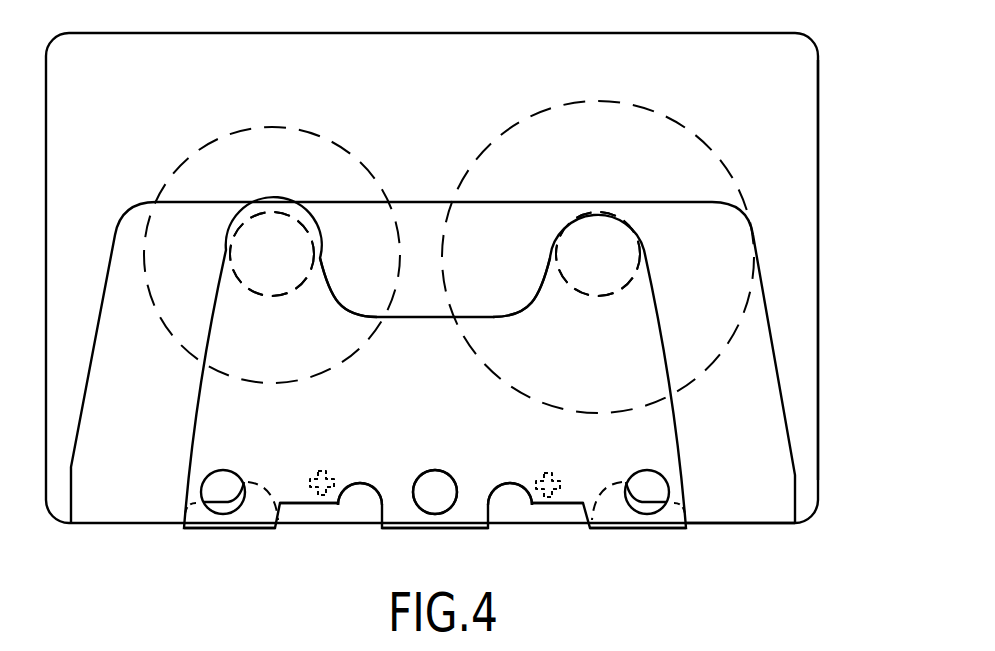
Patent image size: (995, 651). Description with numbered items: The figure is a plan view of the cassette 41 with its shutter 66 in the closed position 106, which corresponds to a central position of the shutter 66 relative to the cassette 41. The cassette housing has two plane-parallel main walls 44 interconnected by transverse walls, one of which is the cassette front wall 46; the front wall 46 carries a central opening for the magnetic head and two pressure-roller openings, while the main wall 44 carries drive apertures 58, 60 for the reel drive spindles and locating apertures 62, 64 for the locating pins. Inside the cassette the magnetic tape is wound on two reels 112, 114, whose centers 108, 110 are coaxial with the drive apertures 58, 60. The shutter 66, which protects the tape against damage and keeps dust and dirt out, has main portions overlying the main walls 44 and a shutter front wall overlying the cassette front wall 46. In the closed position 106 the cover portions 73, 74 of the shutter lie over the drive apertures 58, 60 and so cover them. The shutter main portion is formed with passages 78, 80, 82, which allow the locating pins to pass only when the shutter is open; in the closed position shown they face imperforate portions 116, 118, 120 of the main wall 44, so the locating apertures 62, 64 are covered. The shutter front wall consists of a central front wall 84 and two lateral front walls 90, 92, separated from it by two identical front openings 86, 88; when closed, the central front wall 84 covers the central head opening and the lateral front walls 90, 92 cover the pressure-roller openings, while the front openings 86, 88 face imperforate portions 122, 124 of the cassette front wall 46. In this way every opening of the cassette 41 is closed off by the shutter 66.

The cassette 41 is at (824, 322).
The main walls 44 is at (804, 188).
The cassette front wall 46 is at (757, 525).
The drive aperture 58 is at (278, 223).
The drive aperture 60 is at (596, 230).
The locating aperture 62 is at (323, 470).
The locating aperture 64 is at (548, 471).
The shutter 66 is at (194, 418).
The cover portion 73 is at (318, 280).
The cover portion 74 is at (646, 287).
The passage 78 is at (240, 481).
The passage 80 is at (425, 480).
The passage 82 is at (628, 485).
The central front wall 84 is at (463, 528).
The front opening 86 is at (357, 523).
The front opening 88 is at (573, 527).
The lateral front wall 90 is at (220, 528).
The lateral front wall 92 is at (628, 528).
The closed position 106 is at (688, 430).
The center 108 is at (272, 257).
The center 110 is at (600, 257).
The reel 112 is at (258, 150).
The reel 114 is at (701, 142).
The imperforate portion 116 is at (222, 477).
The imperforate portion 118 is at (445, 487).
The imperforate portion 120 is at (649, 480).
The imperforate portion 122 is at (307, 512).
The imperforate portion 124 is at (513, 512).